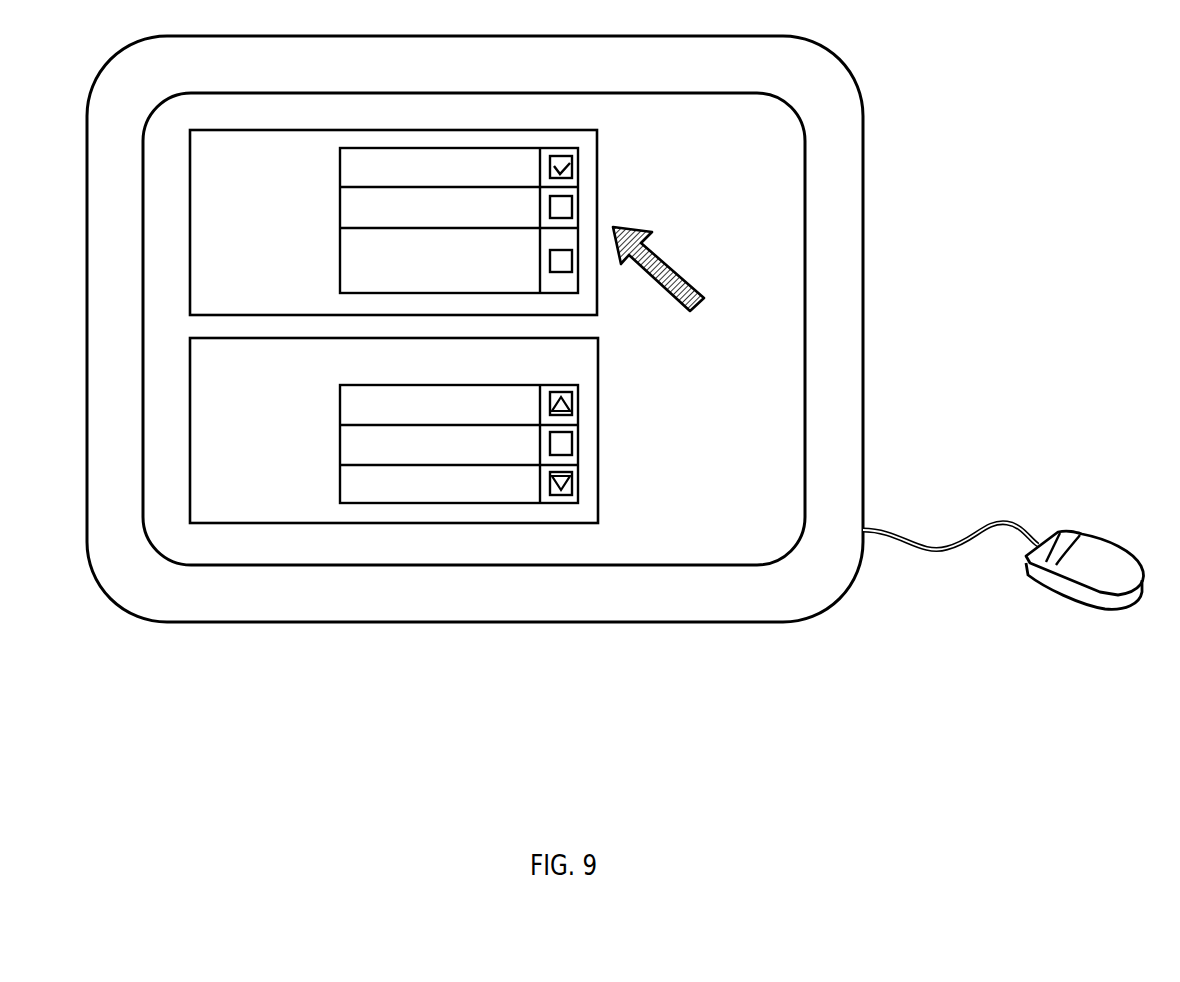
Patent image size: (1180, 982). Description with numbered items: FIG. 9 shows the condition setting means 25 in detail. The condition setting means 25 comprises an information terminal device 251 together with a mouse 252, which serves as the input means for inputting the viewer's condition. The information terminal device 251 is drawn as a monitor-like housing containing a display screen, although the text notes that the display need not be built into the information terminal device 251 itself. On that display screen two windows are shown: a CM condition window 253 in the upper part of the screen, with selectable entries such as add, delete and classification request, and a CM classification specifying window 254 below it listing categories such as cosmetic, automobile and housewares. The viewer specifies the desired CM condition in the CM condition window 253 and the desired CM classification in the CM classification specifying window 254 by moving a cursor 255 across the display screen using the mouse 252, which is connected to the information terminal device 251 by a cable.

The condition setting means 25 is at (622, 322).
The information terminal device 251 is at (810, 73).
The mouse 252 is at (1097, 536).
The CM condition window 253 is at (413, 130).
The CM classification specifying window 254 is at (600, 428).
The cursor 255 is at (660, 251).